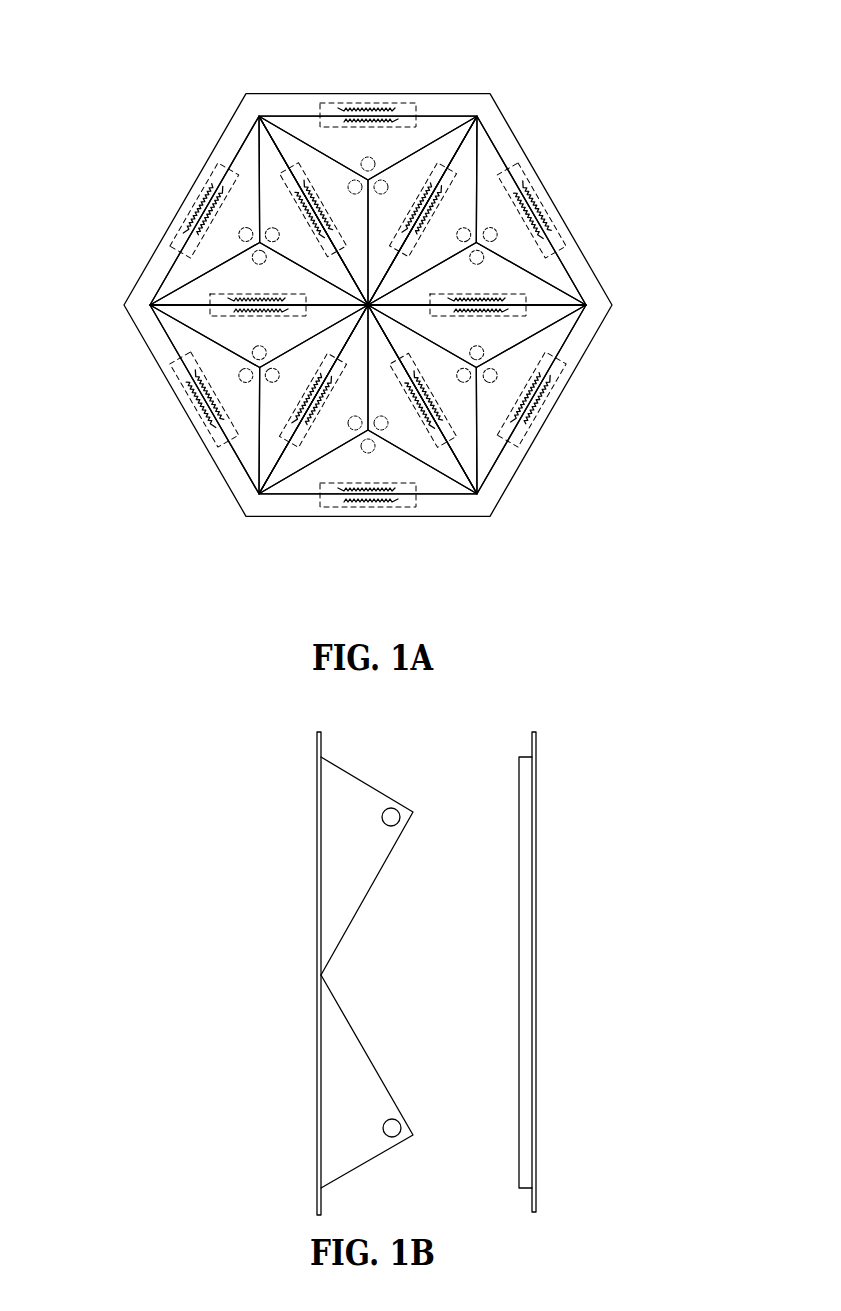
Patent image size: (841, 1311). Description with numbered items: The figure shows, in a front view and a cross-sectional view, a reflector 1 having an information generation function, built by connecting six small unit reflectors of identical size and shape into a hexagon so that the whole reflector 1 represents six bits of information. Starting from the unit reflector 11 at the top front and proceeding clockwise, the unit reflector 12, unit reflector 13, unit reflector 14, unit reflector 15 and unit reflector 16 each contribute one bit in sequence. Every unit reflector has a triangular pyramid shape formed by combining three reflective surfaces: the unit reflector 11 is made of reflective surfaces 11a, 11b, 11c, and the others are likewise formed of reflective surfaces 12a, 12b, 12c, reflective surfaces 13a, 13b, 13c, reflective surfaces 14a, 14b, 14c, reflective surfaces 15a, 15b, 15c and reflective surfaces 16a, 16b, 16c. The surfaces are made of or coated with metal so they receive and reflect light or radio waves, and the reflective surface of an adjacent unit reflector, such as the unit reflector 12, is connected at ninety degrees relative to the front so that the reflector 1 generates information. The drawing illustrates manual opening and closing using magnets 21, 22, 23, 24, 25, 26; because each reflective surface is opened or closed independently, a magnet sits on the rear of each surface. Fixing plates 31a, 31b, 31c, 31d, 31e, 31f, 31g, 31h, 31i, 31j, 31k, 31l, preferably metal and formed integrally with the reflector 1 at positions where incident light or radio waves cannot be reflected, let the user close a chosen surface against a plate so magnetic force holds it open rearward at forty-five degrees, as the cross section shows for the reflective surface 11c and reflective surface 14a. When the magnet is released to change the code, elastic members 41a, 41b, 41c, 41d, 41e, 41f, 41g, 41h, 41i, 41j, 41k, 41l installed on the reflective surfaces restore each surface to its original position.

In FIG. 1A, the reflector 1 is at (526, 63).
In FIG. 1B, the reflector 1 is at (293, 908).
In FIG. 1A, the unit reflector 11 is at (444, 160).
In FIG. 1A, the reflective surface 11a is at (290, 158).
In FIG. 1A, the reflective surface 11b is at (295, 122).
In FIG. 1A, the reflective surface 11c is at (460, 150).
In FIG. 1B, the reflective surface 11c is at (362, 883).
In FIG. 1A, the unit reflector 12 is at (560, 280).
In FIG. 1A, the reflective surface 12a is at (470, 175).
In FIG. 1A, the reflective surface 12b is at (497, 192).
In FIG. 1A, the reflective surface 12c is at (562, 300).
In FIG. 1A, the unit reflector 13 is at (505, 462).
In FIG. 1A, the reflective surface 13a is at (548, 325).
In FIG. 1A, the reflective surface 13b is at (545, 372).
In FIG. 1A, the reflective surface 13c is at (455, 425).
In FIG. 1A, the unit reflector 14 is at (345, 478).
In FIG. 1A, the reflective surface 14a is at (435, 462).
In FIG. 1B, the reflective surface 14a is at (365, 1152).
In FIG. 1A, the reflective surface 14b is at (435, 477).
In FIG. 1A, the reflective surface 14c is at (280, 473).
In FIG. 1A, the unit reflector 15 is at (195, 365).
In FIG. 1A, the reflective surface 15a is at (290, 400).
In FIG. 1A, the reflective surface 15b is at (235, 405).
In FIG. 1A, the reflective surface 15c is at (195, 318).
In FIG. 1A, the unit reflector 16 is at (175, 272).
In FIG. 1A, the reflective surface 16a is at (207, 280).
In FIG. 1A, the reflective surface 16b is at (185, 272).
In FIG. 1A, the reflective surface 16c is at (277, 187).
In FIG. 1A, the magnet 21 is at (390, 180).
In FIG. 1A, the magnet 22 is at (490, 262).
In FIG. 1A, the magnet 23 is at (490, 380).
In FIG. 1A, the magnet 24 is at (372, 448).
In FIG. 1A, the magnet 25 is at (270, 378).
In FIG. 1A, the magnet 26 is at (238, 258).
In FIG. 1A, the fixing plate 31a is at (326, 105).
In FIG. 1A, the fixing plate 31b is at (443, 170).
In FIG. 1A, the fixing plate 31c is at (548, 200).
In FIG. 1A, the fixing plate 31d is at (520, 300).
In FIG. 1A, the fixing plate 31e is at (528, 428).
In FIG. 1A, the fixing plate 31f is at (440, 435).
In FIG. 1A, the fixing plate 31g is at (357, 507).
In FIG. 1A, the fixing plate 31h is at (292, 436).
In FIG. 1A, the fixing plate 31i is at (185, 405).
In FIG. 1A, the fixing plate 31j is at (215, 312).
In FIG. 1A, the fixing plate 31k is at (212, 185).
In FIG. 1A, the fixing plate 31l is at (300, 172).
In FIG. 1A, the elastic member 41a is at (371, 105).
In FIG. 1A, the elastic member 41b is at (447, 160).
In FIG. 1A, the elastic member 41c is at (548, 215).
In FIG. 1A, the elastic member 41d is at (525, 316).
In FIG. 1A, the elastic member 41e is at (540, 412).
In FIG. 1A, the elastic member 41f is at (445, 440).
In FIG. 1A, the elastic member 41g is at (392, 507).
In FIG. 1A, the elastic member 41h is at (300, 420).
In FIG. 1A, the elastic member 41i is at (200, 395).
In FIG. 1A, the elastic member 41j is at (210, 303).
In FIG. 1A, the elastic member 41k is at (207, 200).
In FIG. 1A, the elastic member 41l is at (292, 185).